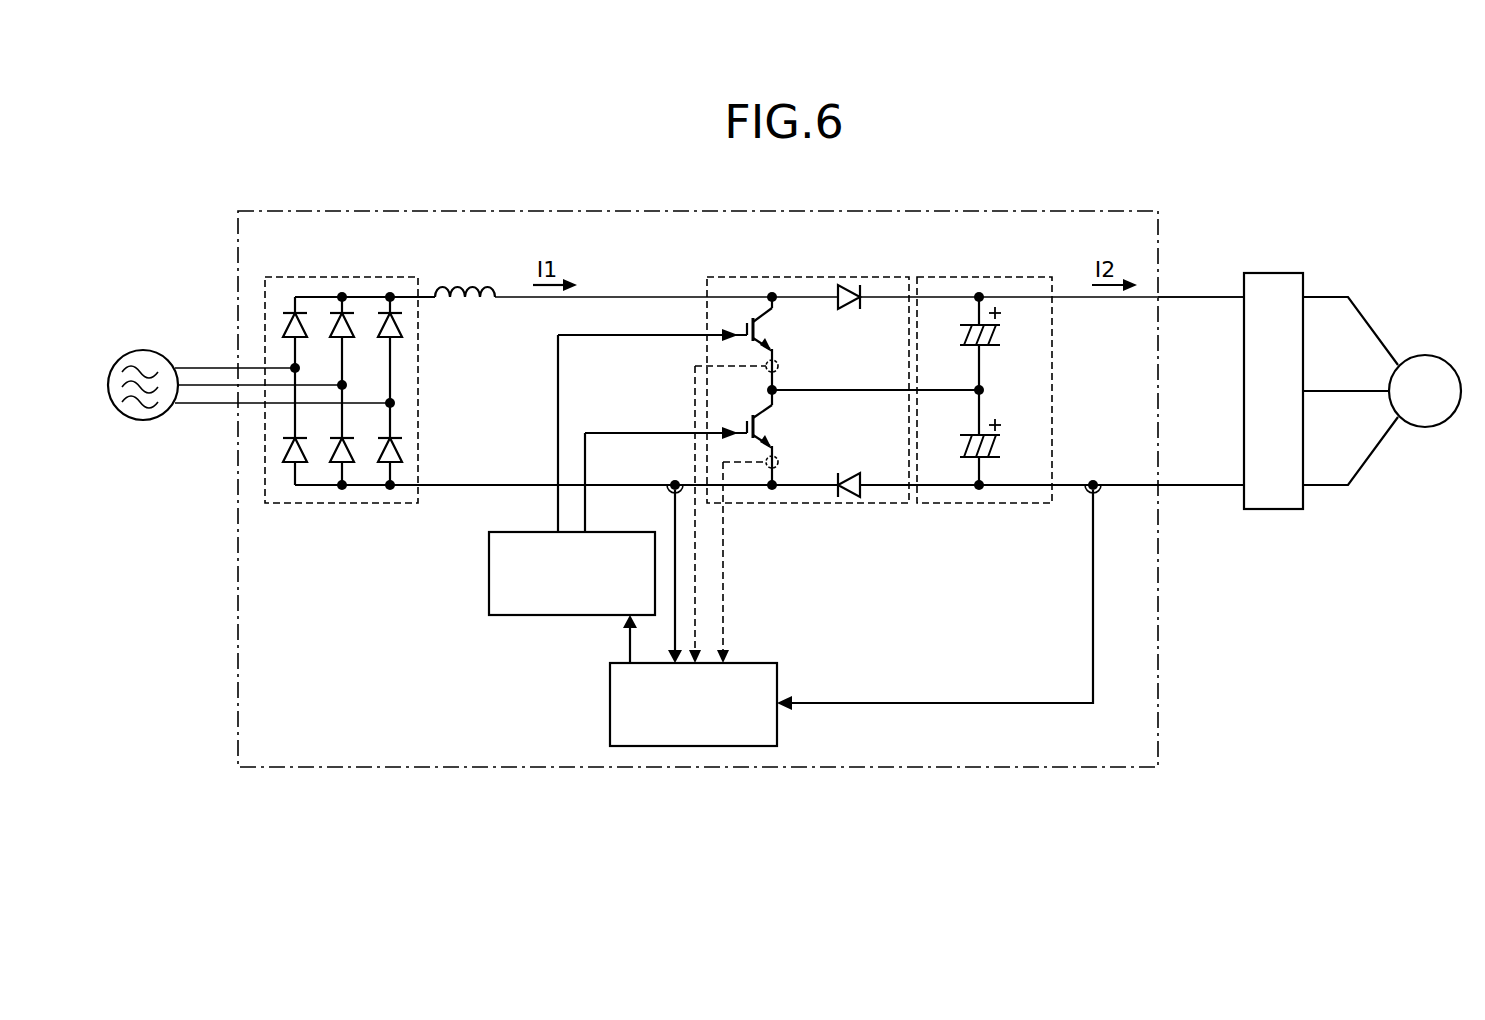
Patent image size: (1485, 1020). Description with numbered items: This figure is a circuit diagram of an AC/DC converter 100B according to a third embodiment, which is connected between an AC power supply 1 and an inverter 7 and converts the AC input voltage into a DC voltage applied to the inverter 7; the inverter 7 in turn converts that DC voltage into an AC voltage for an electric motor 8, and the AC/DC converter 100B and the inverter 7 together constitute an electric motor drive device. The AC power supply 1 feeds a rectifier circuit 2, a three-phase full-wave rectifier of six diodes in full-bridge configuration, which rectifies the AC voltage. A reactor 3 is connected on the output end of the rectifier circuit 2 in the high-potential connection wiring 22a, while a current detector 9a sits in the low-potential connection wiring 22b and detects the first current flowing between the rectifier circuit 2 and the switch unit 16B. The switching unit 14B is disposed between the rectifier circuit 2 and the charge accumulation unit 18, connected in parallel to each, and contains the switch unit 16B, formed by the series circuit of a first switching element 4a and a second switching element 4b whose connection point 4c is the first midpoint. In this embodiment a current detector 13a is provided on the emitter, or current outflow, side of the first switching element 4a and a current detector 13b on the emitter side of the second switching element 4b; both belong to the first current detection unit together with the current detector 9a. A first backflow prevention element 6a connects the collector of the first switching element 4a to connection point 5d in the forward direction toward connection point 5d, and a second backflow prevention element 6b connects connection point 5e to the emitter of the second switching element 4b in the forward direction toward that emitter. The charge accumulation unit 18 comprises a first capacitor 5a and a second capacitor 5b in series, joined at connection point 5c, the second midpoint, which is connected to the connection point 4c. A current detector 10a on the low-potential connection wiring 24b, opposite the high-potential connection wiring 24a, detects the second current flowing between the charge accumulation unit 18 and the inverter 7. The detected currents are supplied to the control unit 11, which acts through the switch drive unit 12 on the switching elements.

The AC/DC converter 100B is at (1080, 211).
The AC power supply 1 is at (143, 350).
The rectifier circuit 2 is at (377, 276).
The reactor 3 is at (468, 284).
The connection wiring 22a is at (518, 300).
The connection wiring 22b is at (444, 489).
The switching unit 14B is at (800, 276).
The switch unit 16B is at (746, 305).
The first switching element 4a is at (778, 333).
The second switching element 4b is at (778, 431).
The connection point 4c is at (767, 390).
The current detector 13a is at (778, 366).
The current detector 13b is at (779, 465).
The current detector 9a is at (672, 480).
The first backflow prevention element 6a is at (848, 287).
The second backflow prevention element 6b is at (851, 504).
The charge accumulation unit 18 is at (1027, 276).
The first capacitor 5a is at (1000, 348).
The second capacitor 5b is at (968, 434).
The connection point 5c is at (975, 388).
The connection point 5d is at (980, 292).
The connection point 5e is at (980, 490).
The current detector 10a is at (1094, 479).
The connection wiring 24a is at (1197, 301).
The connection wiring 24b is at (1195, 490).
The switch drive unit 12 is at (612, 532).
The control unit 11 is at (745, 663).
The inverter 7 is at (1280, 272).
The electric motor 8 is at (1433, 355).